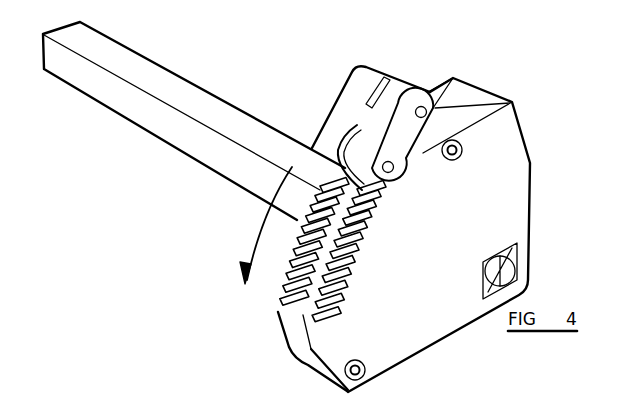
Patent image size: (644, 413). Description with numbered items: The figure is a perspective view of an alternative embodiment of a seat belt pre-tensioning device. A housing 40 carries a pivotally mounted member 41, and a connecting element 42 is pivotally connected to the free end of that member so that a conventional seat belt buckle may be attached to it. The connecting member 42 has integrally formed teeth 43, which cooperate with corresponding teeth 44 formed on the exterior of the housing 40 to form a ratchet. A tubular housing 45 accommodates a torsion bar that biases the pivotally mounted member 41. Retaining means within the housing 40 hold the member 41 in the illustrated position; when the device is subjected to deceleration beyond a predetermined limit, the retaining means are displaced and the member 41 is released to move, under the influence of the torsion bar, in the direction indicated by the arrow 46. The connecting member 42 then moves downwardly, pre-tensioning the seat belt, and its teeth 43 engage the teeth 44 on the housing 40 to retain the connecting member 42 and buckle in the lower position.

The housing 40 is at (510, 180).
The pivotally mounted member 41 is at (350, 138).
The connecting element 42 is at (367, 77).
The teeth 43 is at (425, 160).
The teeth 44 is at (362, 221).
The tubular housing 45 is at (265, 132).
The arrow 46 is at (247, 247).